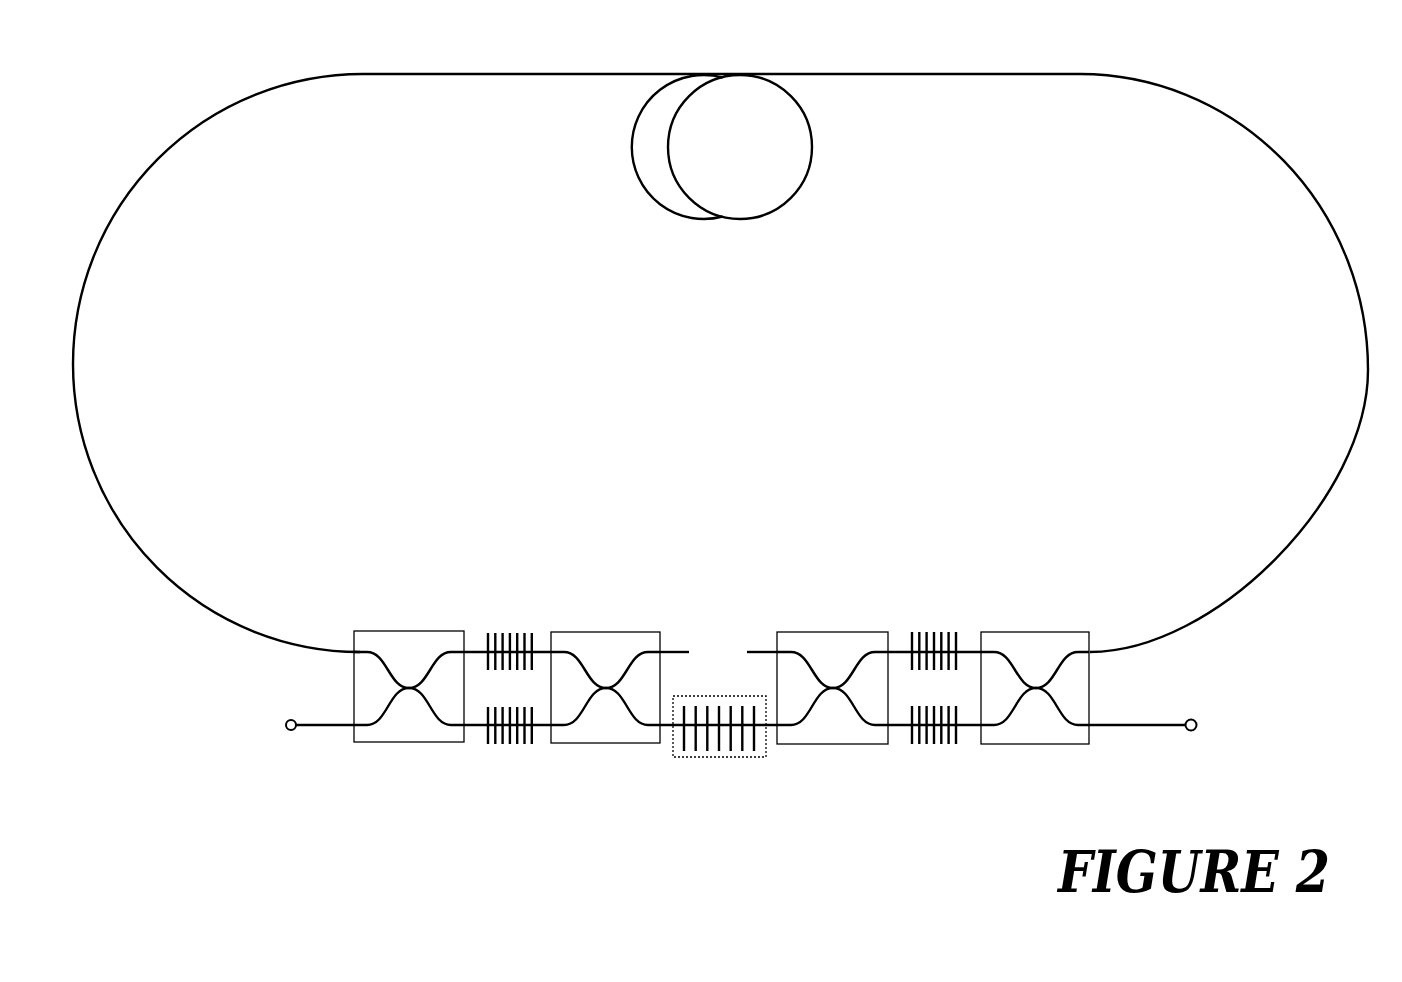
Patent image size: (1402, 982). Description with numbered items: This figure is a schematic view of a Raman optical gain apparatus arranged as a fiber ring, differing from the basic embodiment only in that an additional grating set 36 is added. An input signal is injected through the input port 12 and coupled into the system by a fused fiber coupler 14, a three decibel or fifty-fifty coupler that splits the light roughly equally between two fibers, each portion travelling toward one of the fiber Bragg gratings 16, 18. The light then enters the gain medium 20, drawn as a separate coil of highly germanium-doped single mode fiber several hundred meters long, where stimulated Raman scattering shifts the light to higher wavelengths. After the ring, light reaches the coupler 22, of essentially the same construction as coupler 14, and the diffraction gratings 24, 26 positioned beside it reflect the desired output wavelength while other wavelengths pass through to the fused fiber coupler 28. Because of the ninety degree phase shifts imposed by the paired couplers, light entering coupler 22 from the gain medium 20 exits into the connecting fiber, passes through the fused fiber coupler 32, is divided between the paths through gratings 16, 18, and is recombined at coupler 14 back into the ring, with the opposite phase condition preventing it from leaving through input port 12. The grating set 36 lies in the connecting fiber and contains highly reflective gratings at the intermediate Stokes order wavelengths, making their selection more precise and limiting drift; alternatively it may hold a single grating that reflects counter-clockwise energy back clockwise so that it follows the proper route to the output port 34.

The input port 12 is at (288, 730).
The fused fiber coupler 14 is at (415, 637).
The fiber Bragg grating 16 is at (517, 636).
The fiber Bragg grating 18 is at (502, 744).
The gain medium 20 is at (728, 219).
The coupler 22 is at (1043, 642).
The diffraction grating 24 is at (940, 633).
The diffraction grating 26 is at (927, 745).
The fused fiber coupler 28 is at (833, 637).
The fused fiber coupler 32 is at (607, 641).
The output port 34 is at (1189, 731).
The grating set 36 is at (725, 755).